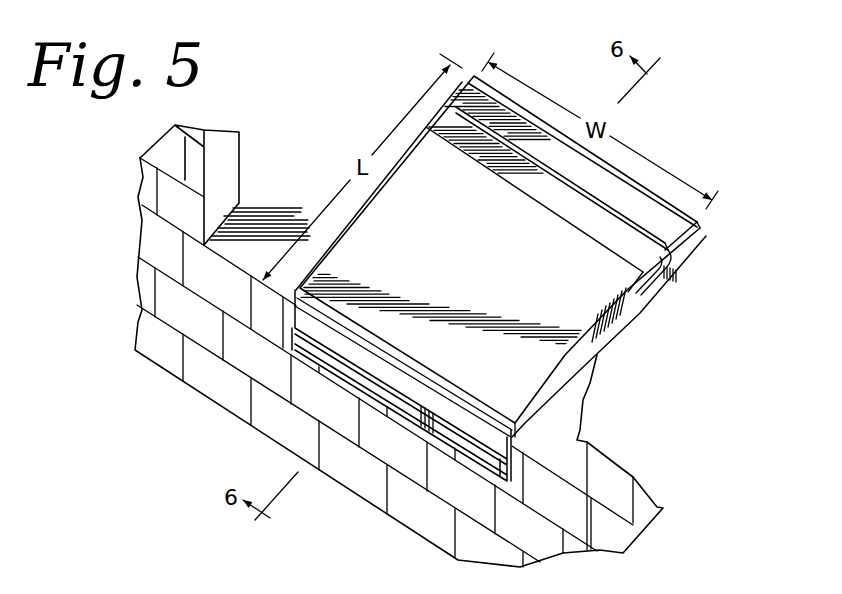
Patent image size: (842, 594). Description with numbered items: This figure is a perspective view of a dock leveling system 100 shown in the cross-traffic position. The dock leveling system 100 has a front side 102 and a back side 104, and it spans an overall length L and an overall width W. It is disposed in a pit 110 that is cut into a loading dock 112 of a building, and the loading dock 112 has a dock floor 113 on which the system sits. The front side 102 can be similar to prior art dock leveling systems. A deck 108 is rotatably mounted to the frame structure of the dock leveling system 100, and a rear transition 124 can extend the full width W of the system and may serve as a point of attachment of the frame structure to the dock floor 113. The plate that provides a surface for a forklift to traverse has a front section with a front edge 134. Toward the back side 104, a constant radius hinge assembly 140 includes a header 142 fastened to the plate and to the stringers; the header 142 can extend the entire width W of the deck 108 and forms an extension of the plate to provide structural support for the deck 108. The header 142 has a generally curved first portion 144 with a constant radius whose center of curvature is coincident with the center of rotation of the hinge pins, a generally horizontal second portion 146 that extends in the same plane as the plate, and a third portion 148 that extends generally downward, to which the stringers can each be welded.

The dock leveling system 100 is at (541, 352).
The front side 102 is at (351, 373).
The back side 104 is at (643, 139).
The deck 108 is at (517, 392).
The pit 110 is at (526, 420).
The loading dock 112 is at (320, 162).
The dock floor 113 is at (294, 207).
The rear transition 124 is at (655, 210).
The front edge 134 is at (498, 130).
The constant radius hinge assembly 140 is at (465, 131).
The header 142 is at (440, 128).
The first portion 144 is at (672, 257).
The second portion 146 is at (660, 284).
The third portion 148 is at (637, 300).